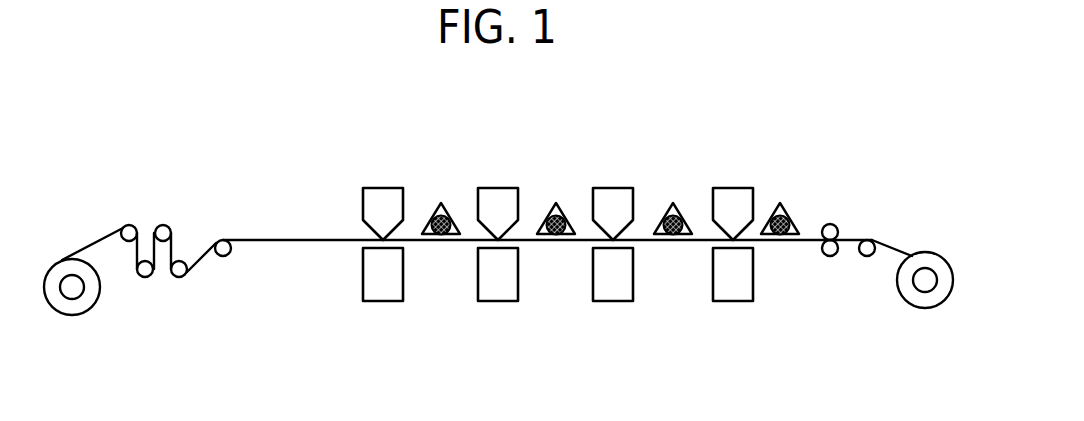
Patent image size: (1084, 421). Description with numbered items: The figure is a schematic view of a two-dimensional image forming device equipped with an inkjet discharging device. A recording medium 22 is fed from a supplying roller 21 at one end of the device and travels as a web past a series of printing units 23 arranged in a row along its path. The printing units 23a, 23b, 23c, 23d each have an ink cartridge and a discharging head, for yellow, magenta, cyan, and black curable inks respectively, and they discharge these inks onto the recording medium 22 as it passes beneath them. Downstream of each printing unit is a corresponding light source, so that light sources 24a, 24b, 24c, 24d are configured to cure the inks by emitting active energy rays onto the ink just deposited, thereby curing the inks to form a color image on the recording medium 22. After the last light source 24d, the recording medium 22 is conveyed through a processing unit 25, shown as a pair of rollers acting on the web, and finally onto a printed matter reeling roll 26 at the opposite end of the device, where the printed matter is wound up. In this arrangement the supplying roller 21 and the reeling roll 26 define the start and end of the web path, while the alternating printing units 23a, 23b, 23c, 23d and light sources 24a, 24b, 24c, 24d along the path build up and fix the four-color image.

The supplying roller 21 is at (72, 290).
The recording medium 22 is at (277, 239).
The printing units 23 is at (358, 126).
The printing unit 23a is at (385, 195).
The printing unit 23b is at (497, 195).
The printing unit 23c is at (613, 195).
The printing unit 23d is at (733, 195).
The light source 24a is at (445, 210).
The light source 24b is at (558, 210).
The light source 24c is at (675, 210).
The light source 24d is at (785, 210).
The processing unit 25 is at (833, 216).
The printed matter reeling roll 26 is at (922, 283).